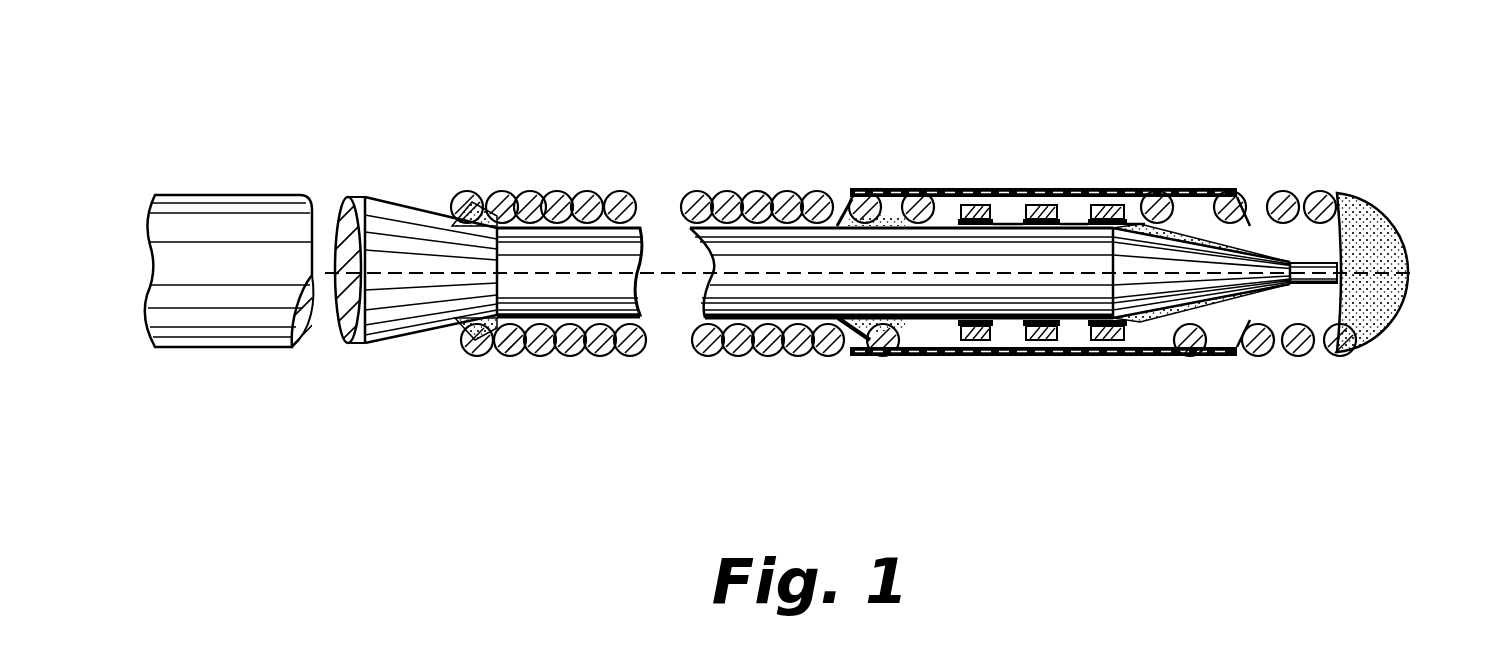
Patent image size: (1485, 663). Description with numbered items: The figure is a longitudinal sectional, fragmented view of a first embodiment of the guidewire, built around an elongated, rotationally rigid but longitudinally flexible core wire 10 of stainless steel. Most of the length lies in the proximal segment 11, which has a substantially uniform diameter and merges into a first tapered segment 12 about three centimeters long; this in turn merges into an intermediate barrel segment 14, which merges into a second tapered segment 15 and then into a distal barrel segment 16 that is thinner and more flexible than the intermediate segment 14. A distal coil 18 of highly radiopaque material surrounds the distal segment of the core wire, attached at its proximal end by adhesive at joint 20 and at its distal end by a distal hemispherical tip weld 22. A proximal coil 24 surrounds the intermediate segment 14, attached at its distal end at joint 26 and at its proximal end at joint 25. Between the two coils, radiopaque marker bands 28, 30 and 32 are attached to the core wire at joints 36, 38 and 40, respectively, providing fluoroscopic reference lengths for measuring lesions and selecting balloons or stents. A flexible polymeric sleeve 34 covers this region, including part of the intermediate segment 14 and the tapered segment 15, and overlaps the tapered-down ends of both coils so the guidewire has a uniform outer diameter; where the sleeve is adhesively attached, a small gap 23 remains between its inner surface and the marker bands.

The core wire 10 is at (256, 182).
The proximal segment 11 is at (375, 372).
The first tapered segment 12 is at (412, 322).
The intermediate barrel segment 14 is at (587, 327).
The second tapered segment 15 is at (1205, 192).
The distal barrel segment 16 is at (1375, 350).
The distal coil 18 is at (1275, 358).
The joint 20 is at (1197, 192).
The distal hemispherical tip weld 22 is at (1410, 232).
The gap 23 is at (966, 192).
The proximal coil 24 is at (590, 192).
The joint 25 is at (487, 192).
The joint 26 is at (893, 192).
The radiopaque marker band 28 is at (968, 357).
The radiopaque marker band 30 is at (1038, 355).
The radiopaque marker band 32 is at (1115, 355).
The flexible polymeric sleeve 34 is at (912, 192).
The joint 36 is at (1005, 192).
The joint 38 is at (1085, 192).
The joint 40 is at (1140, 192).